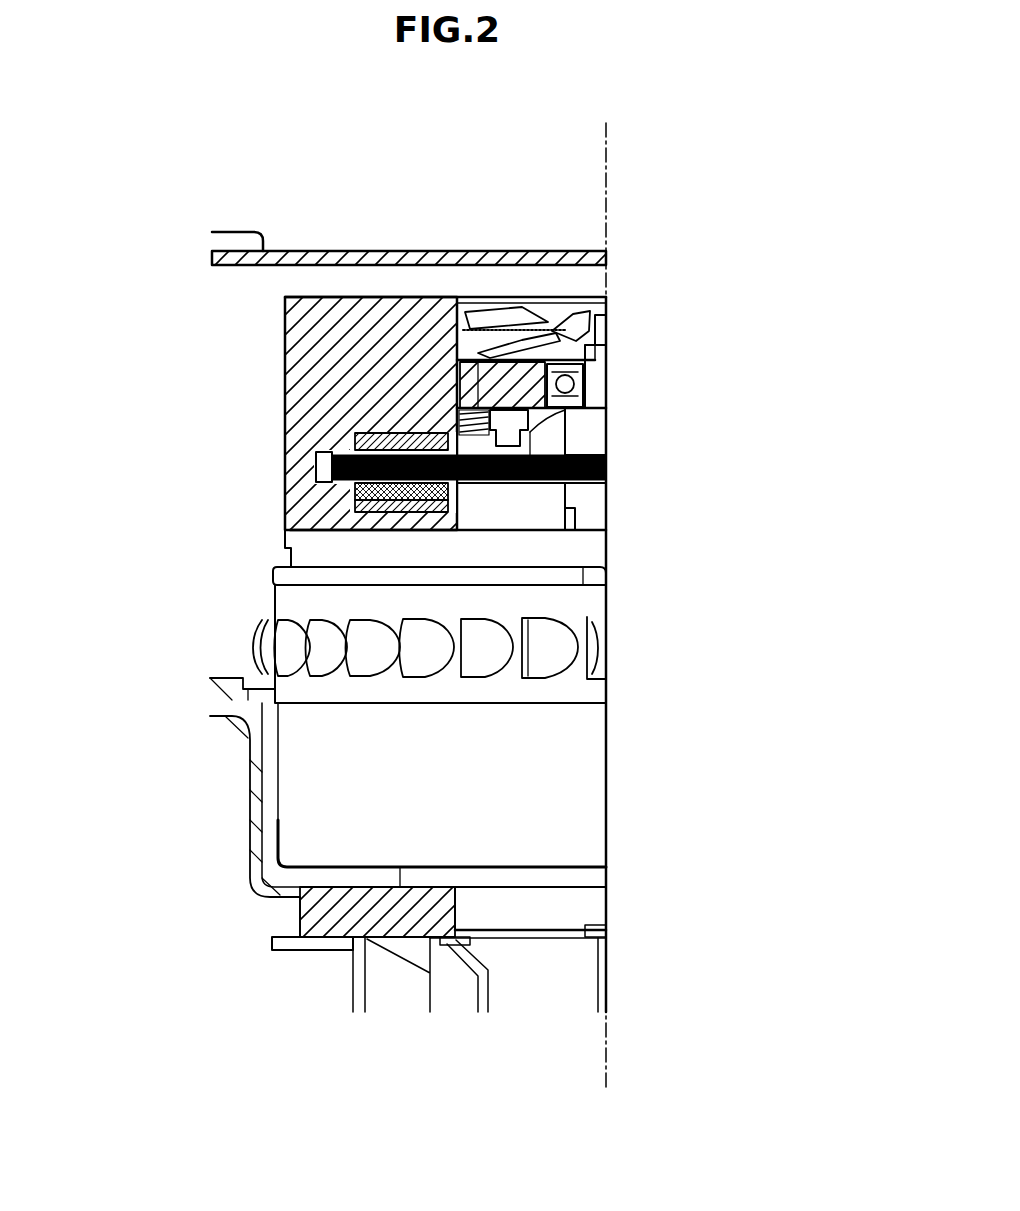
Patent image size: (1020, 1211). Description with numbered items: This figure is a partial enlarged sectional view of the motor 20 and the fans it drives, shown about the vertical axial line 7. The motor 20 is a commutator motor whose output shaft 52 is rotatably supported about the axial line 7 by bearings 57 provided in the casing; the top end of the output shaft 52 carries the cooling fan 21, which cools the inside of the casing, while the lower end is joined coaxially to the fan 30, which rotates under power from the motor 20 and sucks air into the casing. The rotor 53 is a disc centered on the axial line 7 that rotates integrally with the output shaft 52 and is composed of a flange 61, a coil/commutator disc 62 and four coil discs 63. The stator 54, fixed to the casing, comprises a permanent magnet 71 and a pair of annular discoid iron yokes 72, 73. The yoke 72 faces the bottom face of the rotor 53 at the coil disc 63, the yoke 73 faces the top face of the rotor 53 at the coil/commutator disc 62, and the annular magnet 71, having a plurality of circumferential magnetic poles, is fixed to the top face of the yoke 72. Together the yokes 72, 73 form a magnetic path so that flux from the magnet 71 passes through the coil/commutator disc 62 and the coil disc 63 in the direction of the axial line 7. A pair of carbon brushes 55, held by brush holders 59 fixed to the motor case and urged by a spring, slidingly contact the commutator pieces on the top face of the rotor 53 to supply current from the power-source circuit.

The axial line 7 is at (607, 160).
The motor 20 is at (786, 178).
The cooling fan 21 is at (478, 330).
The fan 30 is at (570, 785).
The output shaft 52 is at (595, 371).
The rotor 53 is at (215, 706).
The stator 54 is at (287, 473).
The brushes 55 is at (462, 427).
The bearings 57 is at (555, 365).
The brush holders 59 is at (494, 440).
The flange 61 is at (552, 488).
The coil/commutator disc 62 is at (607, 450).
The coil discs 63 is at (606, 473).
The magnet 71 is at (357, 494).
The yoke 72 is at (355, 507).
The yoke 73 is at (352, 434).